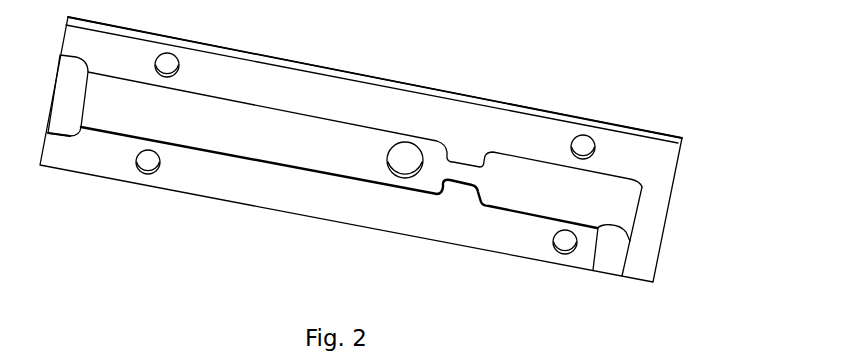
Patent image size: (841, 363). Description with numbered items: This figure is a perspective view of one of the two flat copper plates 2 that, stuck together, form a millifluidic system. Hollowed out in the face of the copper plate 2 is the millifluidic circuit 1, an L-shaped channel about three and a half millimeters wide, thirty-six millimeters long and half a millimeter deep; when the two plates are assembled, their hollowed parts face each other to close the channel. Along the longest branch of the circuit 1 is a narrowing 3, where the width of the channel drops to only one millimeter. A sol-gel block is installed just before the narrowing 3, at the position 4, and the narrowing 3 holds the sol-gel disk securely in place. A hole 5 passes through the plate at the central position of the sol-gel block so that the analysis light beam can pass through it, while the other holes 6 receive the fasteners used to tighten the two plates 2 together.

The millifluidic circuit 1 is at (250, 138).
The copper plate 2 is at (320, 93).
The narrowing 3 is at (458, 175).
The sol-gel block location 4 is at (407, 138).
The hole 5 is at (405, 158).
The holes 6 is at (563, 240).